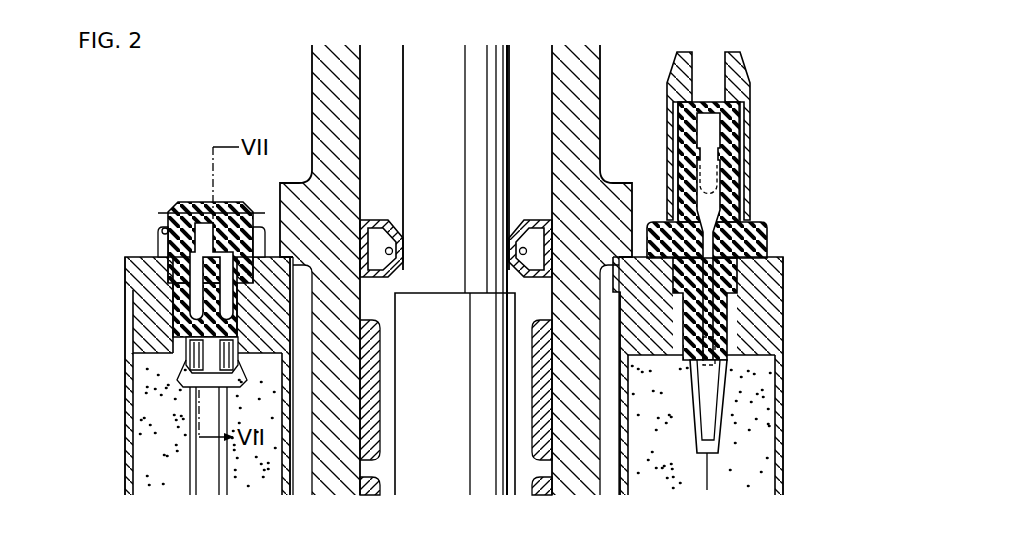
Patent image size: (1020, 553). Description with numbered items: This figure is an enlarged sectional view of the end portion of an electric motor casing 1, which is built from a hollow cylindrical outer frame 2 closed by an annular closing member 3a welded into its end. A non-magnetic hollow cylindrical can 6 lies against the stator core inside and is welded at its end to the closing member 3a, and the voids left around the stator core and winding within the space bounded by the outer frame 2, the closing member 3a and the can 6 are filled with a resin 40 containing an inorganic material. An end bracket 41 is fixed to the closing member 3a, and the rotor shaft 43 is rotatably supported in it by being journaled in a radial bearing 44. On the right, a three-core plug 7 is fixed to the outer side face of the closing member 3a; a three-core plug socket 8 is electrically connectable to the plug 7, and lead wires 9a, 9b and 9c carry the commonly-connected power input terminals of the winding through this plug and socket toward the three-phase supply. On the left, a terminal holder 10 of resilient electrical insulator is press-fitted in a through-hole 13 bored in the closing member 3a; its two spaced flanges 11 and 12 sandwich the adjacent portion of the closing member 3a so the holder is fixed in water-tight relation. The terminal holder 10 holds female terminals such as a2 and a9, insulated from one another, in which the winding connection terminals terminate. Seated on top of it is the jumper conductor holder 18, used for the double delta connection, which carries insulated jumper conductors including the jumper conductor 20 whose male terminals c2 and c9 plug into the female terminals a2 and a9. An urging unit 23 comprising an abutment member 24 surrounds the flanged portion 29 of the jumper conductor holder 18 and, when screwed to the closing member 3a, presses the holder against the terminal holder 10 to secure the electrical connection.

The casing 1 is at (124, 437).
The outer frame 2 is at (127, 476).
The closing member 3a is at (140, 337).
The can 6 is at (617, 486).
The three-core plug 7 is at (725, 340).
The three-core plug socket 8 is at (732, 173).
The lead wire 9a is at (718, 86).
The lead wire 9b is at (756, 84).
The lead wire 9c is at (762, 84).
The terminal holder 10 is at (190, 320).
The flange 11 is at (180, 348).
The flange 12 is at (187, 290).
The through-hole 13 is at (292, 327).
The jumper conductor holder 18 is at (205, 207).
The jumper conductor 20 is at (217, 250).
The urging unit 23 is at (160, 209).
The abutment member 24 is at (160, 240).
The flanged portion 29 is at (167, 228).
The resin 40 is at (768, 456).
The end bracket 41 is at (322, 88).
The rotor shaft 43 is at (500, 102).
The radial bearing 44 is at (390, 380).
The female terminal a2 is at (185, 362).
The female terminal a9 is at (237, 366).
The male terminal c2 is at (183, 273).
The male terminal c9 is at (250, 240).